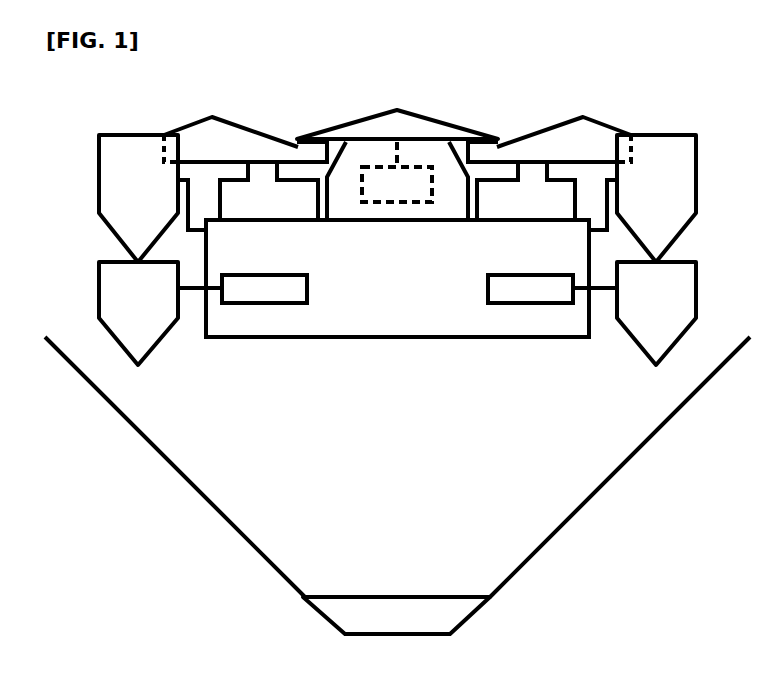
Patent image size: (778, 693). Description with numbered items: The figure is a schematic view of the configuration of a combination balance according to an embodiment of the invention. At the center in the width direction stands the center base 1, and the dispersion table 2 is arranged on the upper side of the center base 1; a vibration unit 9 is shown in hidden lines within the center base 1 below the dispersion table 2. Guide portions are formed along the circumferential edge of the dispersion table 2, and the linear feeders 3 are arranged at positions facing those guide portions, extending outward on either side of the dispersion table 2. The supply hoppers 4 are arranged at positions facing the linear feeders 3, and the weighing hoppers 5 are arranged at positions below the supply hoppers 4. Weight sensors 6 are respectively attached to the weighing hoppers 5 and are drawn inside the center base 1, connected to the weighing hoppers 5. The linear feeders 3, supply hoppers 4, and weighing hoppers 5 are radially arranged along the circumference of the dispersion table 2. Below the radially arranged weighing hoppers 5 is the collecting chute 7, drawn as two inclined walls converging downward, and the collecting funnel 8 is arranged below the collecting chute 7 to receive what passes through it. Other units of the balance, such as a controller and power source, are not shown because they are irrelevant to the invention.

The center base 1 is at (365, 340).
The dispersion table 2 is at (362, 118).
The linear feeder 3 is at (545, 131).
The supply hopper 4 is at (735, 158).
The weighing hopper 5 is at (735, 278).
The weight sensor 6 is at (455, 288).
The collecting chute 7 is at (148, 443).
The collecting funnel 8 is at (327, 624).
The vibration unit 9 is at (418, 162).